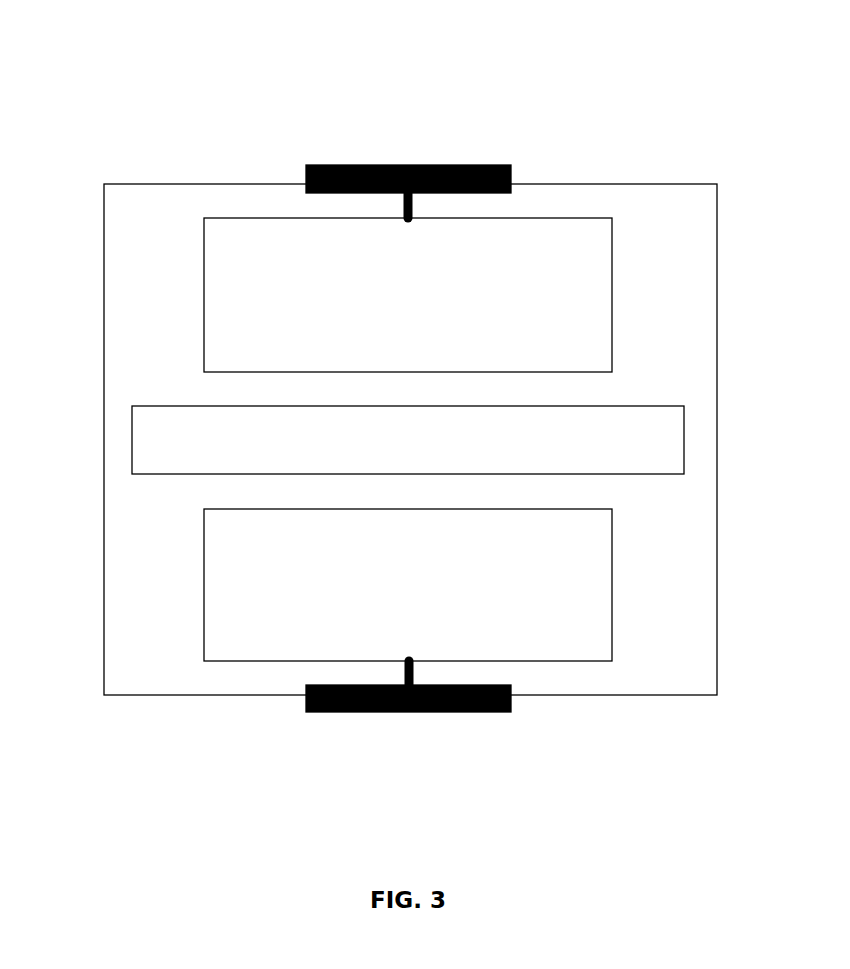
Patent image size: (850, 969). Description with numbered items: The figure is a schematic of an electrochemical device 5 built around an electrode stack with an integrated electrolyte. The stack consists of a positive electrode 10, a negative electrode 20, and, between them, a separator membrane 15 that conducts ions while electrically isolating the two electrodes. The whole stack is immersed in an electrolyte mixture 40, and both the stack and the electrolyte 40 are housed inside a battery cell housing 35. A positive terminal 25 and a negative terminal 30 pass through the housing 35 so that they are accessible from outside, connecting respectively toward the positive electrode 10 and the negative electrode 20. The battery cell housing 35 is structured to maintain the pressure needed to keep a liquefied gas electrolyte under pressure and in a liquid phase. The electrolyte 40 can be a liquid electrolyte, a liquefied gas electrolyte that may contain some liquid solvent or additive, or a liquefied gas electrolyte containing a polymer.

The electrochemical device 5 is at (716, 133).
The positive electrode 10 is at (408, 295).
The separator membrane 15 is at (408, 440).
The negative electrode 20 is at (408, 585).
The positive terminal 25 is at (407, 165).
The negative terminal 30 is at (407, 712).
The battery cell housing 35 is at (717, 438).
The electrolyte mixture 40 is at (675, 617).